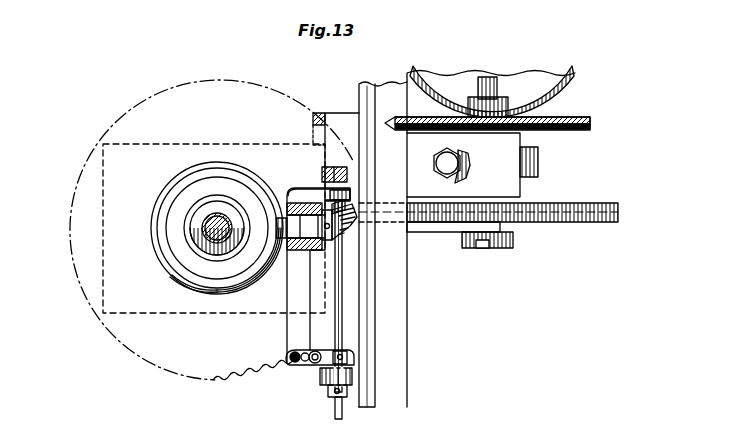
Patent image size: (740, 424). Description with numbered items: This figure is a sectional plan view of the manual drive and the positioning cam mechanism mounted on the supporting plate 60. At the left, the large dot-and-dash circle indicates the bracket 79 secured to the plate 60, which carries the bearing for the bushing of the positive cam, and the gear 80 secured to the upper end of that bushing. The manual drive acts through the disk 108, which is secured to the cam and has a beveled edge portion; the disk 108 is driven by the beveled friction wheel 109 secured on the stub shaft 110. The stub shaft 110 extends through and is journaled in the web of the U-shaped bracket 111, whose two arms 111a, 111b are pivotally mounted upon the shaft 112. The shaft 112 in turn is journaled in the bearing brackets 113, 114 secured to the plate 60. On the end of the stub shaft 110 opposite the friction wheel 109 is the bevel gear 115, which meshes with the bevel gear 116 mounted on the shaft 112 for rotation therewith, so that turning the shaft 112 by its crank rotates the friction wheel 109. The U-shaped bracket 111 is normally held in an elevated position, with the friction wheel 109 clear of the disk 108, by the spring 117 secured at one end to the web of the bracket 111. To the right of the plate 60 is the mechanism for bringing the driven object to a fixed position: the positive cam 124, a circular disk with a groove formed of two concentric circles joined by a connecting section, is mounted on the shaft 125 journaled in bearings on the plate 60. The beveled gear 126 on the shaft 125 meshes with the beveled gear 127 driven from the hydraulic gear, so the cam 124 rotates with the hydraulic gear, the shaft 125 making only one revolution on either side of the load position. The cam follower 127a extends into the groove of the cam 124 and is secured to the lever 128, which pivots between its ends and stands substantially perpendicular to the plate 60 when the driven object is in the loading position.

The bracket 79 is at (103, 250).
The gear 80 is at (215, 381).
The plate 60 is at (366, 92).
The disk 108 is at (219, 182).
The beveled driving wheel 109 is at (266, 200).
The stub shaft 110 is at (290, 242).
The U-shaped bracket 111 is at (296, 323).
The arm of U-shaped bracket 111a is at (322, 192).
The arm of U-shaped bracket 111b is at (320, 368).
The shaft 112 is at (348, 332).
The bearing bracket 113 is at (324, 166).
The bearing bracket 114 is at (325, 383).
The bevel gear 115 is at (333, 224).
The bevel gear 116 is at (340, 210).
The spring 117 is at (289, 354).
The positive cam 124 is at (618, 212).
The shaft 125 is at (497, 82).
The beveled gear 126 is at (590, 121).
The beveled gear 127 is at (576, 80).
The cam follower 127a is at (490, 220).
The lever 128 is at (435, 232).